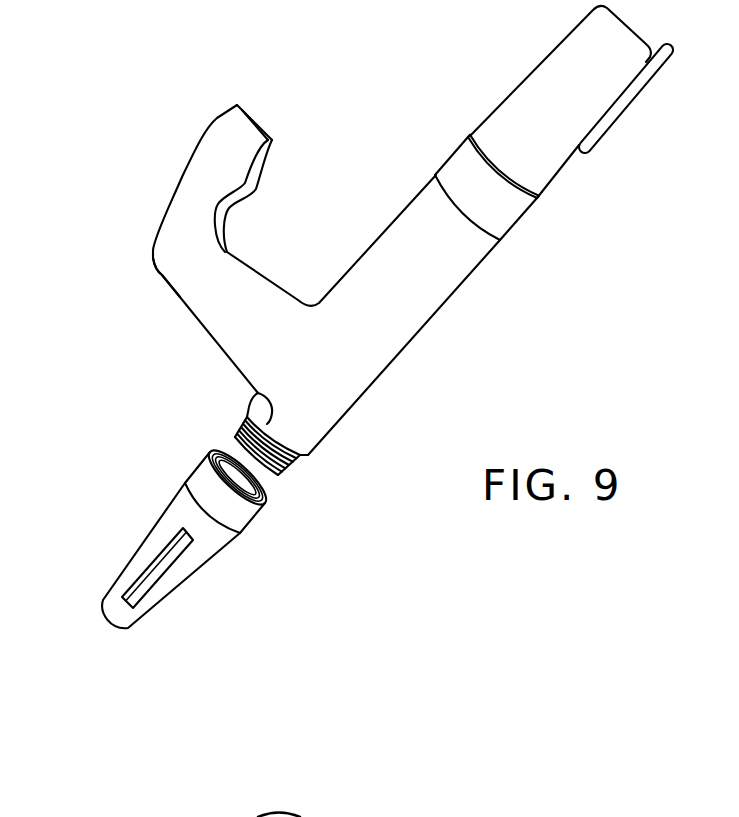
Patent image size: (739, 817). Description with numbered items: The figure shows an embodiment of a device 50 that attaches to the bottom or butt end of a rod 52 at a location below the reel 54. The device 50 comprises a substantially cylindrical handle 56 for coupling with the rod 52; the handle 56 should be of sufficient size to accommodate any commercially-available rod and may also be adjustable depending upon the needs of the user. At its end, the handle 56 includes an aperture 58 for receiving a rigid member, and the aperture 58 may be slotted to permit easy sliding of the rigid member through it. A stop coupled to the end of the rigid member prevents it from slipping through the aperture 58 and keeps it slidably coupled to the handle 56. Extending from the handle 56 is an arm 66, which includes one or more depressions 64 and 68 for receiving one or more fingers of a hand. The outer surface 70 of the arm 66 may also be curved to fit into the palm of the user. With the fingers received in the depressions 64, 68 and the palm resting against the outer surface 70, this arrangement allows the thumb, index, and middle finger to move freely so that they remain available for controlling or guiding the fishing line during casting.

The device 50 is at (117, 140).
The rod 52 is at (533, 70).
The reel 54 is at (630, 107).
The handle 56 is at (420, 293).
The aperture 58 is at (157, 565).
The depression 64 is at (232, 167).
The arm 66 is at (180, 230).
The depression 68 is at (272, 140).
The outer surface 70 is at (160, 272).